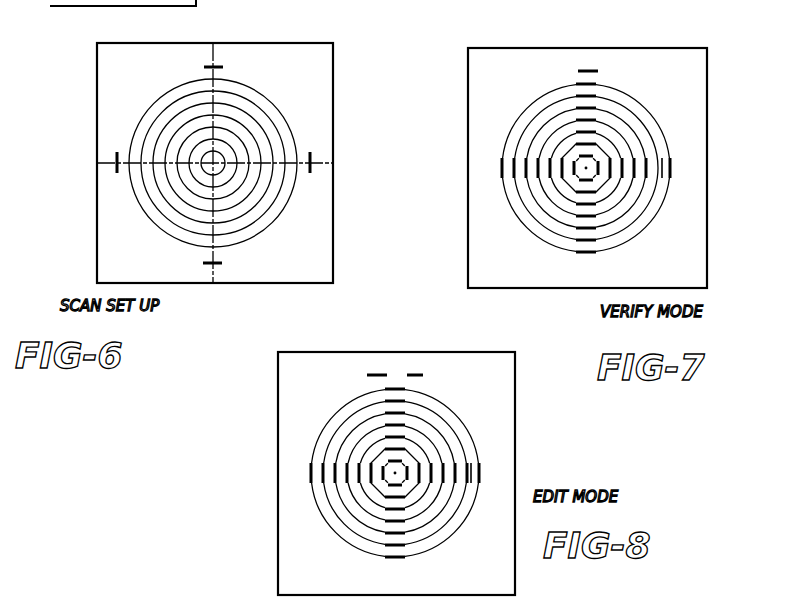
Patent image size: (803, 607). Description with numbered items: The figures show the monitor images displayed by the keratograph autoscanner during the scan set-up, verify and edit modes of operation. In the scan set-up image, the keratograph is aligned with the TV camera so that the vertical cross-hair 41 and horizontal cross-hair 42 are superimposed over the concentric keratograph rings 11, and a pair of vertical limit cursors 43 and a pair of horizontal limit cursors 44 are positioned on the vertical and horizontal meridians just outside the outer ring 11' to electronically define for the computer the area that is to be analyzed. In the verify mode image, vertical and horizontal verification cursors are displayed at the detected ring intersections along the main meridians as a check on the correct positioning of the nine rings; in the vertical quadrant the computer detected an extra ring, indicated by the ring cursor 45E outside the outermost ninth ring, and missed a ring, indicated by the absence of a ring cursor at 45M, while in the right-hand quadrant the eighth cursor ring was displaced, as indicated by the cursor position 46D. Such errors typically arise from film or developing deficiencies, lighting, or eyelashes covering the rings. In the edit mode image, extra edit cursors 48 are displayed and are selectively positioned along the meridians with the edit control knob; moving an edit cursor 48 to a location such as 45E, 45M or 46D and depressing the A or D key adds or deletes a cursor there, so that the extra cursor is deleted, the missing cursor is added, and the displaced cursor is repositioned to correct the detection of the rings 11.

In FIG. 6, the keratograph rings 11 is at (224, 149).
In FIG. 7, the keratograph rings 11 is at (579, 157).
In FIG. 6, the outer ring 11' is at (244, 155).
In FIG. 6, the vertical cross-hair 41 is at (213, 97).
In FIG. 6, the horizontal cross-hair 42 is at (321, 170).
In FIG. 6, the vertical limit cursors 43 is at (204, 67).
In FIG. 6, the horizontal limit cursors 44 is at (117, 150).
In FIG. 7, the ring cursor for extra ring 45E is at (600, 71).
In FIG. 7, the missing ring cursor location 45M is at (592, 142).
In FIG. 7, the displaced cursor position 46D is at (661, 186).
In FIG. 8, the edit cursors 48 is at (416, 371).